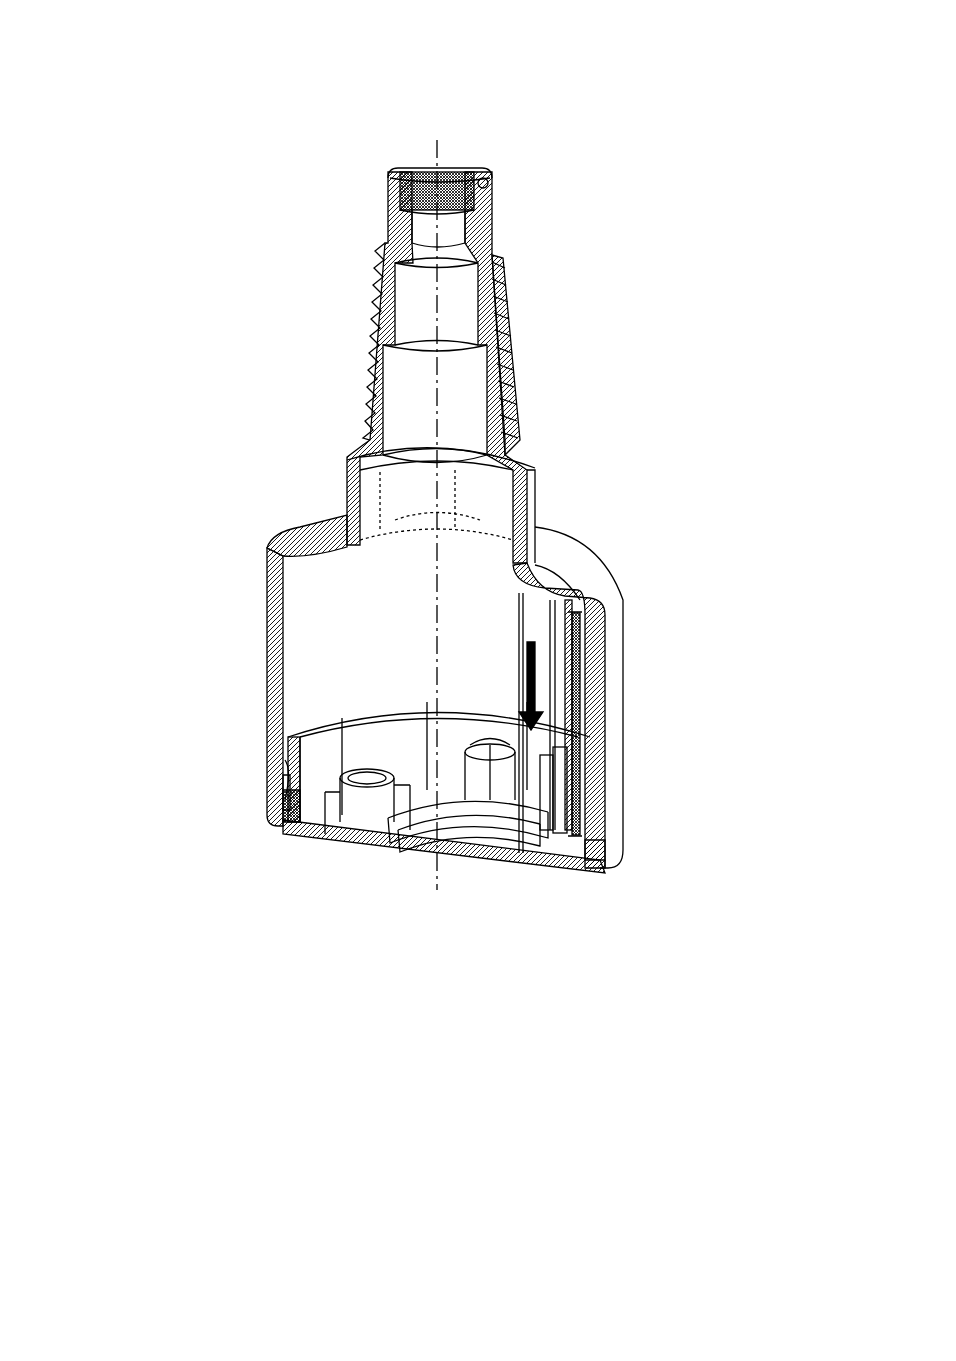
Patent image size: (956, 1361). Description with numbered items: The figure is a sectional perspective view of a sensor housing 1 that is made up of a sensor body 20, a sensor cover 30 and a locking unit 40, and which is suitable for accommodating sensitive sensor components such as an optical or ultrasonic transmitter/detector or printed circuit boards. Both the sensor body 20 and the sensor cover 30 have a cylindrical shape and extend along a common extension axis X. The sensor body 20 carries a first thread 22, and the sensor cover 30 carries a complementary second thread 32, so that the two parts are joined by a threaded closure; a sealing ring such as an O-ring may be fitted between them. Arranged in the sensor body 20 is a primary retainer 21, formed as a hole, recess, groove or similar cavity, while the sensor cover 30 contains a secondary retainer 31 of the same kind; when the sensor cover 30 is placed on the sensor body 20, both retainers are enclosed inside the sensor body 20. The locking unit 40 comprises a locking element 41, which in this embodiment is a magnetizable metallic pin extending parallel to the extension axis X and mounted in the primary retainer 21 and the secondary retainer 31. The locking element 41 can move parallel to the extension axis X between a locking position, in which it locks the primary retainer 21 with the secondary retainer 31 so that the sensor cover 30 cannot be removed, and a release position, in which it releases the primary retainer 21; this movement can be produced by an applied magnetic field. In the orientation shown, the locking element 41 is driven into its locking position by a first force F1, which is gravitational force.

The sensor housing 1 is at (148, 212).
The extension axis X is at (438, 170).
The sensor body 20 is at (240, 610).
The primary retainer 21 is at (602, 822).
The first thread 22 is at (266, 797).
The sensor cover 30 is at (352, 895).
The secondary retainer 31 is at (577, 852).
The second thread 32 is at (283, 800).
The locking unit 40 is at (688, 662).
The locking element 41 is at (585, 768).
The first force F1 is at (537, 650).